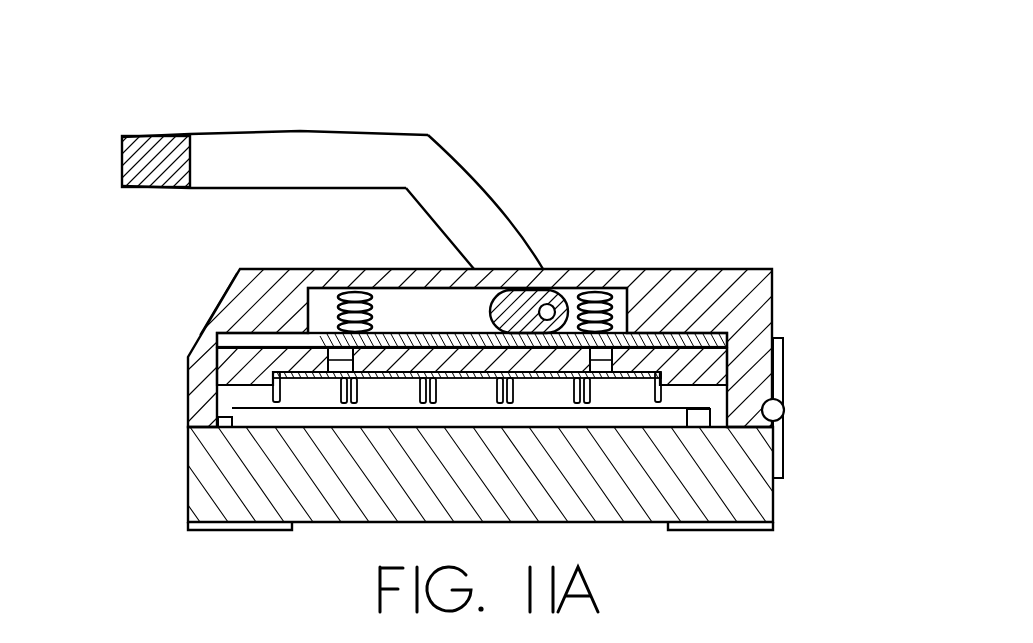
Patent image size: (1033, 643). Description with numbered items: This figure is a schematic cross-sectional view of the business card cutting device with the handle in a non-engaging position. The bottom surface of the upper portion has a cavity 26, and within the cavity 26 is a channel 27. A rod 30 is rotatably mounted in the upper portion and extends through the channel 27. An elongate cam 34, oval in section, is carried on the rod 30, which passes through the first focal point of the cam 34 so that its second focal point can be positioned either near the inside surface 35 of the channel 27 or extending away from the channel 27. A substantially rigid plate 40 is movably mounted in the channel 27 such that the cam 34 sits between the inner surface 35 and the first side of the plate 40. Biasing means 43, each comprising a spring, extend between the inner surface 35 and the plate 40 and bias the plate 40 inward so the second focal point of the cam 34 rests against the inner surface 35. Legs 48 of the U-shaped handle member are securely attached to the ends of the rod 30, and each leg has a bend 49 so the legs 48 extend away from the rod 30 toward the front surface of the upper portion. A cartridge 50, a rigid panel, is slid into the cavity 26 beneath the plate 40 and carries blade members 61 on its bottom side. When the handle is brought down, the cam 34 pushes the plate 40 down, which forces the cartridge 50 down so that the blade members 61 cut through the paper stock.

The cavity 26 is at (238, 397).
The channel 27 is at (433, 310).
The rod 30 is at (540, 308).
The elongate cam 34 is at (515, 303).
The inside surface of the channel 35 is at (580, 292).
The plate 40 is at (308, 345).
The biasing means 43 is at (350, 306).
The legs 48 is at (287, 150).
The bend 49 is at (427, 145).
The cartridge 50 is at (707, 358).
The blade member 61 is at (225, 405).